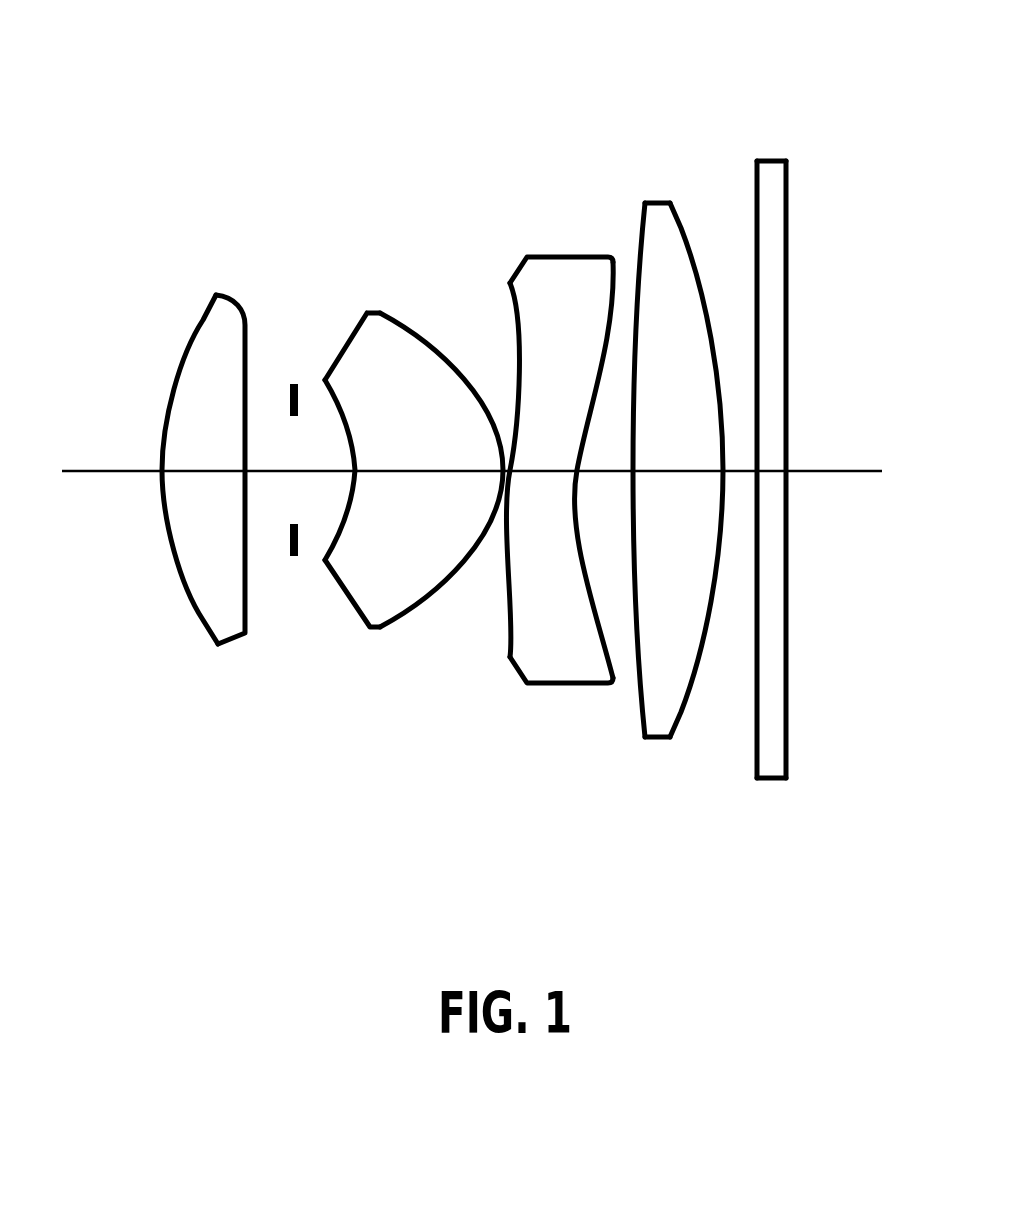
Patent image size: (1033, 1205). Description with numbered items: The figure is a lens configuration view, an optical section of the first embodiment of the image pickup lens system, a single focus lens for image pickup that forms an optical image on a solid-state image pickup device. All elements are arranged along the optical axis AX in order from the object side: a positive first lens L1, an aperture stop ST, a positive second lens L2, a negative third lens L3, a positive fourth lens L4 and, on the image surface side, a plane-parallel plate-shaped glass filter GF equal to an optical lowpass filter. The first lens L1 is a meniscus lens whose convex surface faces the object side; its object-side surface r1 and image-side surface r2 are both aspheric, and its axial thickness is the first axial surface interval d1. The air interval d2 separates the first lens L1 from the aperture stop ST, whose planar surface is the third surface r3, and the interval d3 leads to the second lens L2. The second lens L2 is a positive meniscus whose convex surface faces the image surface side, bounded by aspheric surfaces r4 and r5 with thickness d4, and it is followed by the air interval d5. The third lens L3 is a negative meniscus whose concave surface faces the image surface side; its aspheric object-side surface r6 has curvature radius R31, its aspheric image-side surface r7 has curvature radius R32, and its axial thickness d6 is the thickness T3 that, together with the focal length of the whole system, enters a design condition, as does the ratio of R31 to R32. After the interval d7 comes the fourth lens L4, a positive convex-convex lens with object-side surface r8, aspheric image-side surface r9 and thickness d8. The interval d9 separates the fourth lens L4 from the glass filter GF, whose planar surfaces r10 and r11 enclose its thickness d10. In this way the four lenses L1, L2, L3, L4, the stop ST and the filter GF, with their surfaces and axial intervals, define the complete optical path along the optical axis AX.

The first surface r1 is at (173, 377).
The second surface r2 is at (243, 357).
The third surface r3 is at (231, 347).
The aperture stop ST is at (291, 400).
The fourth surface r4 is at (345, 396).
The fifth surface r5 is at (407, 325).
The sixth surface r6 is at (463, 395).
The curvature radius of the object-side surface of the third lens R31 is at (513, 340).
The seventh surface r7 is at (526, 378).
The curvature radius of the image-side surface of the third lens R32 is at (600, 377).
The eighth surface r8 is at (640, 228).
The ninth surface r9 is at (698, 252).
The tenth surface r10 is at (755, 213).
The eleventh surface r11 is at (789, 193).
The first axial surface interval d1 is at (203, 447).
The second axial surface interval d2 is at (268, 478).
The third axial surface interval d3 is at (308, 478).
The fourth axial surface interval d4 is at (429, 449).
The fifth axial surface interval d5 is at (503, 505).
The sixth axial surface interval d6 is at (495, 602).
The axial thickness of the third lens T3 is at (553, 483).
The seventh axial surface interval d7 is at (615, 478).
The eighth axial surface interval d8 is at (678, 449).
The ninth axial surface interval d9 is at (740, 475).
The tenth axial surface interval d10 is at (770, 468).
The first lens L1 is at (146, 505).
The second lens L2 is at (390, 484).
The third lens L3 is at (495, 446).
The fourth lens L4 is at (657, 448).
The glass filter GF is at (805, 409).
The optical axis AX is at (486, 591).